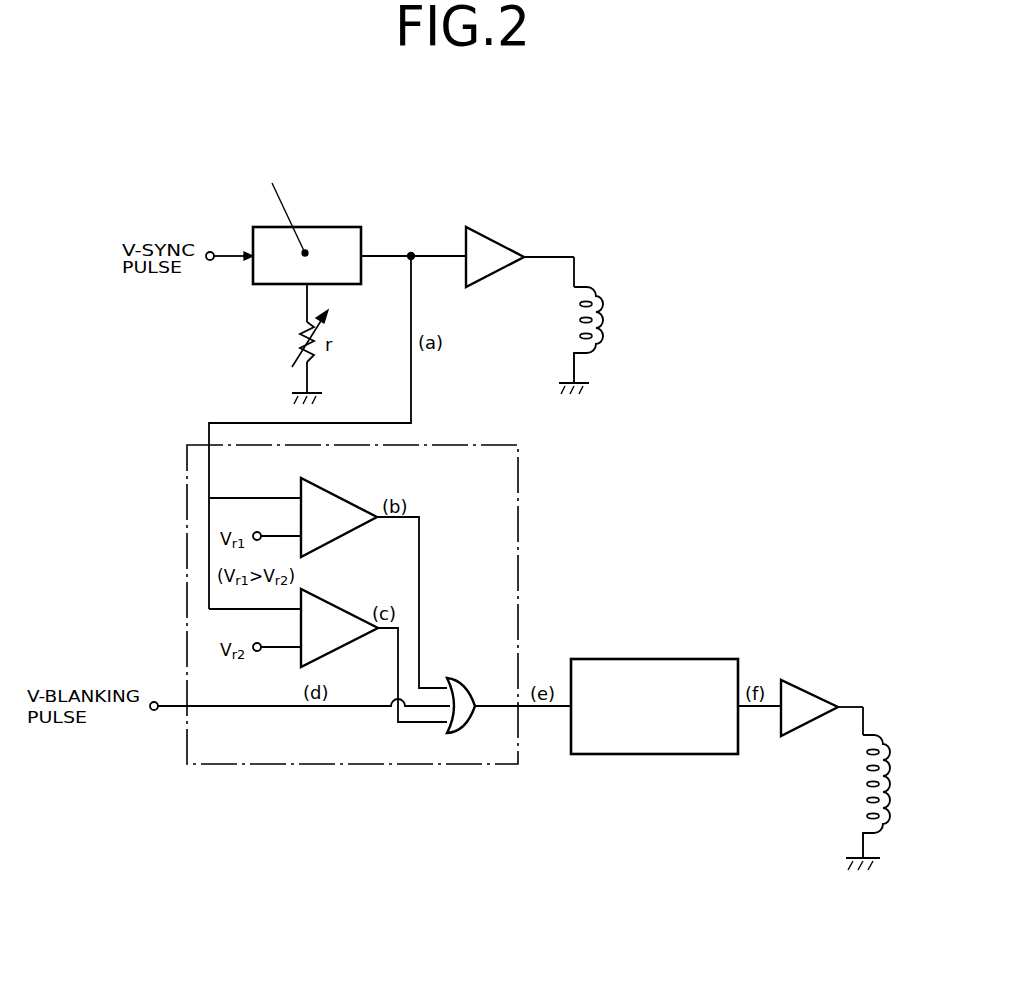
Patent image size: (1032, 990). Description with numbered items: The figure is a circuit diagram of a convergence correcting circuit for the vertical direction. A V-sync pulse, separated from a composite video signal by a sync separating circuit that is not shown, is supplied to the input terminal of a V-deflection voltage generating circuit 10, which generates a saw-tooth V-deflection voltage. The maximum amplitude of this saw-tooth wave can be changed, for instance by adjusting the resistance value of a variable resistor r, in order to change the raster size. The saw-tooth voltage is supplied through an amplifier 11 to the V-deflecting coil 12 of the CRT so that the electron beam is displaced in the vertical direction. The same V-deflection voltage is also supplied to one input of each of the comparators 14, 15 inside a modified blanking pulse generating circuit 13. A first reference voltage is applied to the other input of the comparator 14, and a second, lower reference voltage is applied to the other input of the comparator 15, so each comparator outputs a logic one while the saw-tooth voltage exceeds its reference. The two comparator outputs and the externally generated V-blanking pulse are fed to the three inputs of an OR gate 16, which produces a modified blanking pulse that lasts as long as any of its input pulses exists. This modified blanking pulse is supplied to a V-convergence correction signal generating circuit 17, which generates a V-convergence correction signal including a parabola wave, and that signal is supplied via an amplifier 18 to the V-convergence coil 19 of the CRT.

The V-deflection voltage generating circuit 10 is at (347, 227).
The amplifier 11 is at (506, 247).
The V-deflecting coil 12 is at (602, 300).
The modified blanking pulse generating circuit 13 is at (520, 483).
The comparator 14 is at (355, 500).
The comparator 15 is at (355, 599).
The OR gate 16 is at (460, 677).
The V-convergence correction signal generating circuit 17 is at (707, 659).
The amplifier 18 is at (811, 690).
The V-convergence coil 19 is at (882, 741).